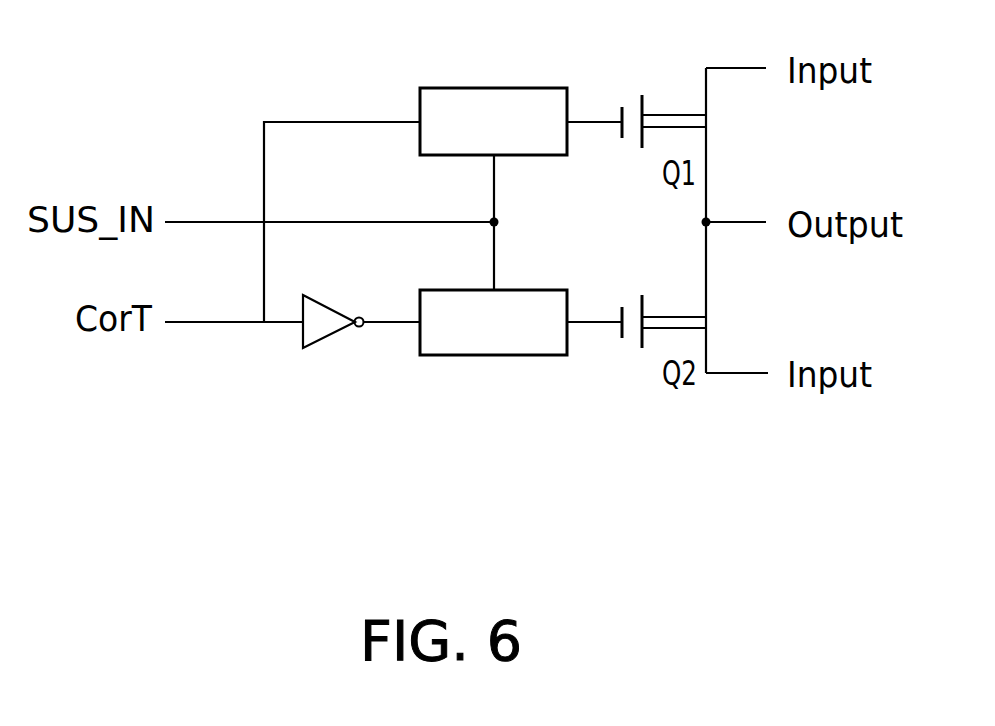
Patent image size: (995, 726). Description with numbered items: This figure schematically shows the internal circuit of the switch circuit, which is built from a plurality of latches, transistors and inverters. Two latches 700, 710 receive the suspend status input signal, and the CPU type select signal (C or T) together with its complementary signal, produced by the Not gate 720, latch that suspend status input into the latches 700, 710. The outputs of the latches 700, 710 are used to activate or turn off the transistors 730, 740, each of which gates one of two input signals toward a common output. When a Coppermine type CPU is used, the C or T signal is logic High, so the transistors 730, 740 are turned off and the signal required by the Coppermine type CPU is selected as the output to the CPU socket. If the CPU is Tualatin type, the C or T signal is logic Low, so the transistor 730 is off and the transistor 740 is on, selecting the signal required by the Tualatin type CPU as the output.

The latch 700 is at (497, 86).
The latch 710 is at (496, 357).
The Not gate 720 is at (329, 333).
The transistor 730 is at (712, 97).
The transistor 740 is at (713, 345).